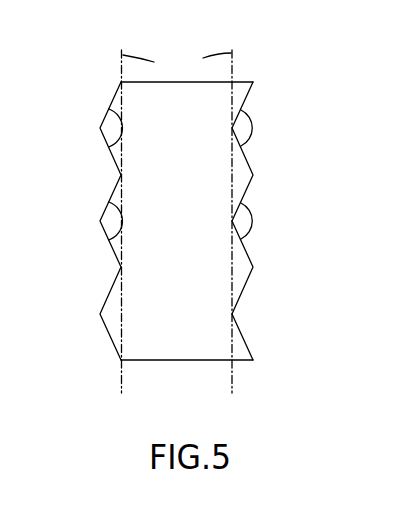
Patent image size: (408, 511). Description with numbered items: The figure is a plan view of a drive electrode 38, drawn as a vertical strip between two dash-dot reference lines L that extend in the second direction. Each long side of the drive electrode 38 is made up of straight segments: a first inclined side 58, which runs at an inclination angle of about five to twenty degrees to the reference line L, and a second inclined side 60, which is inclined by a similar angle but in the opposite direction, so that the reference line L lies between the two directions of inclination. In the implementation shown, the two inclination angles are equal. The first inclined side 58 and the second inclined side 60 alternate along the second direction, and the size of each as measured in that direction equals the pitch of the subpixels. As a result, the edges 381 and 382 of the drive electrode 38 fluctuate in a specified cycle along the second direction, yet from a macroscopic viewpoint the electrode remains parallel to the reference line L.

The drive electrode 38 is at (180, 347).
The first inclined side 58 is at (112, 97).
The second inclined side 60 is at (109, 151).
The edge of the drive electrode 381 is at (118, 272).
The edge of the drive electrode 382 is at (237, 222).